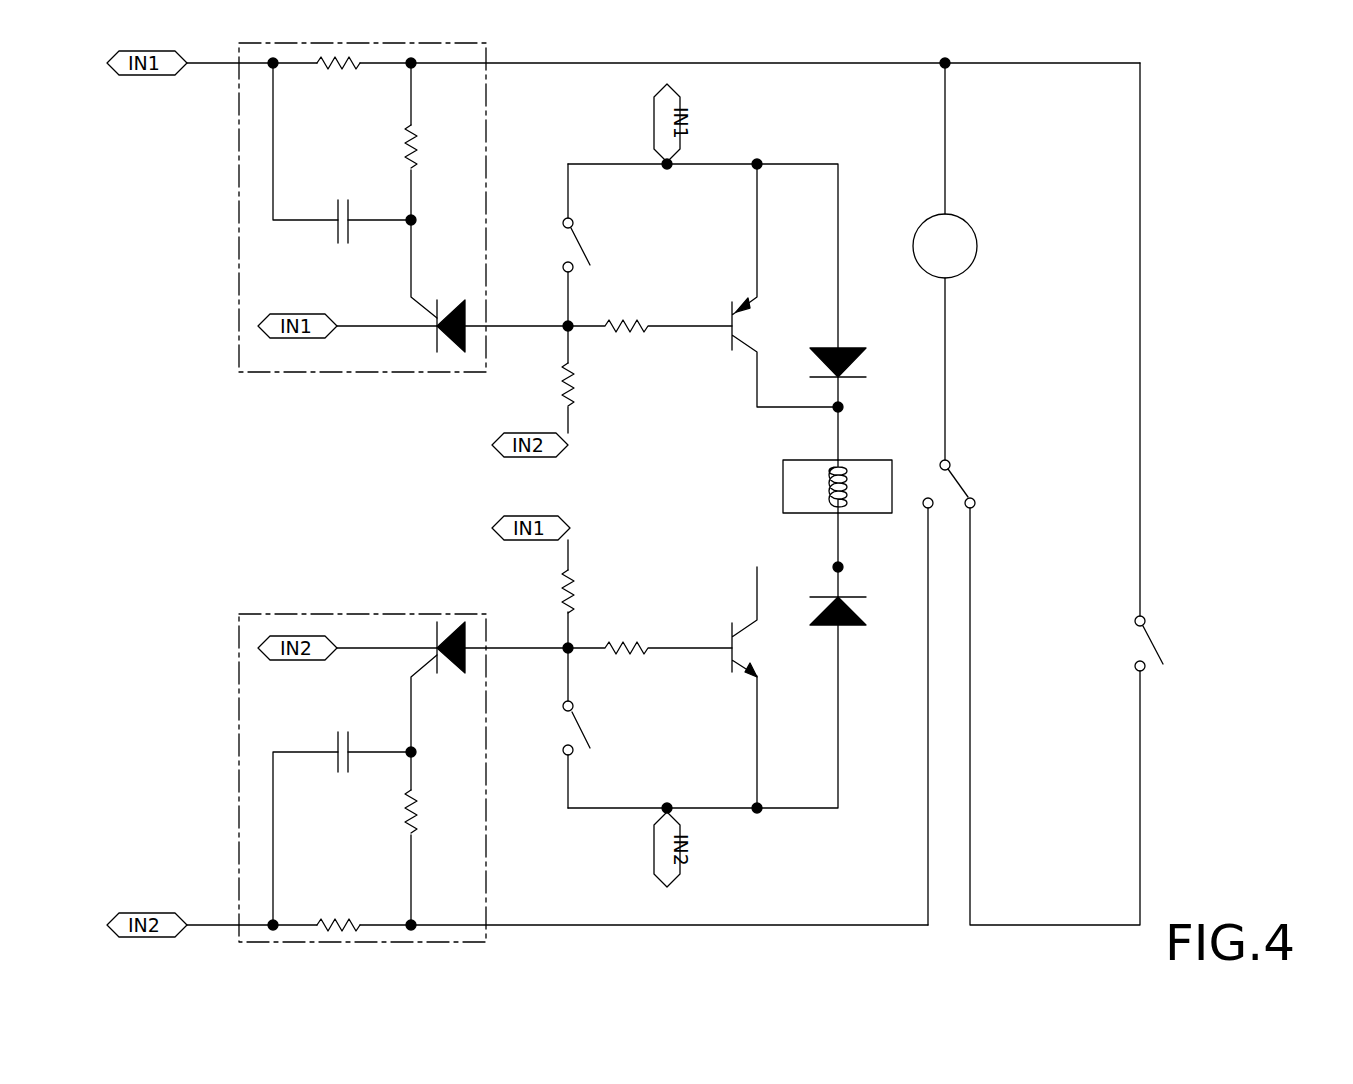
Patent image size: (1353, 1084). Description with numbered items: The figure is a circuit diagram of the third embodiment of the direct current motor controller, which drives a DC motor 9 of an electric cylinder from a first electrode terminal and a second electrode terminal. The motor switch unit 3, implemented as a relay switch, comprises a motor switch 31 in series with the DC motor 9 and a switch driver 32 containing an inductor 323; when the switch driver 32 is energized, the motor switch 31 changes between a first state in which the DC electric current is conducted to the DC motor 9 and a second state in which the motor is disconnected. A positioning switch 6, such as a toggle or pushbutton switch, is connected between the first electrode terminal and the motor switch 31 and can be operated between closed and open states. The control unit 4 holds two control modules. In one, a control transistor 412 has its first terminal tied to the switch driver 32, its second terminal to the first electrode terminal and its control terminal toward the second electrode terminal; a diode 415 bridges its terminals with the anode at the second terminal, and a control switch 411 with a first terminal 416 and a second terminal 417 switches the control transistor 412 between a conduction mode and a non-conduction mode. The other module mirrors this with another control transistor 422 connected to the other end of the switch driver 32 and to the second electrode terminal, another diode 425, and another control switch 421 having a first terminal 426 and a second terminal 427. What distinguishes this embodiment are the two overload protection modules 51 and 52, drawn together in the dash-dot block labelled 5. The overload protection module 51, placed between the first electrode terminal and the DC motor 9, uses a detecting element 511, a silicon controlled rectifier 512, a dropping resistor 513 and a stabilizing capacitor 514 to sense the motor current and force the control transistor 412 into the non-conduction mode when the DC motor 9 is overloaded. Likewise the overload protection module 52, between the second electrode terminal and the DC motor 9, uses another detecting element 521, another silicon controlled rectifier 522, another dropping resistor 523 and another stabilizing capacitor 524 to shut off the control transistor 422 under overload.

The motor switch unit 3 is at (983, 650).
The motor switch 31 is at (952, 464).
The switch driver 32 is at (789, 473).
The inductor 323 is at (828, 497).
The control unit 4 is at (697, 472).
The control switch 411 is at (590, 209).
The control transistor 412 is at (731, 301).
The diode 415 is at (846, 346).
The first terminal of control switch 416 is at (565, 219).
The second terminal of control switch 417 is at (562, 267).
The another control switch 421 is at (592, 751).
The another control transistor 422 is at (730, 625).
The another diode 425 is at (846, 628).
The first terminal of another control switch 426 is at (564, 754).
The second terminal of another control switch 427 is at (562, 706).
The input processing unit 5 is at (295, 492).
The overload protection module 51 is at (297, 207).
The detecting element 511 is at (322, 70).
The silicon controlled rectifier 512 is at (460, 300).
The dropping resistor 513 is at (415, 130).
The stabilizing capacitor 514 is at (337, 231).
The another overload protection module 52 is at (297, 778).
The another detecting element 521 is at (322, 920).
The another silicon controlled rectifier 522 is at (458, 674).
The another dropping resistor 523 is at (418, 826).
The another stabilizing capacitor 524 is at (337, 741).
The positioning switch 6 is at (1160, 618).
The DC motor 9 is at (980, 233).